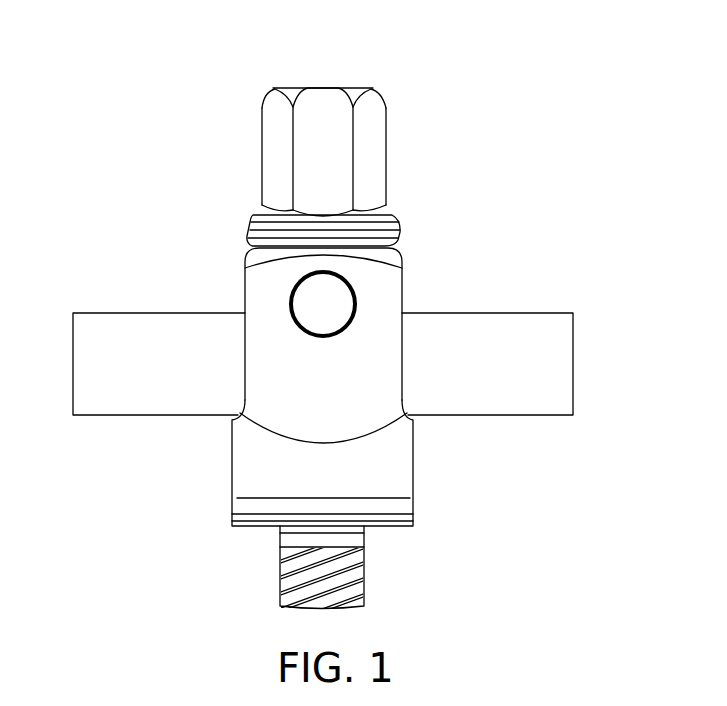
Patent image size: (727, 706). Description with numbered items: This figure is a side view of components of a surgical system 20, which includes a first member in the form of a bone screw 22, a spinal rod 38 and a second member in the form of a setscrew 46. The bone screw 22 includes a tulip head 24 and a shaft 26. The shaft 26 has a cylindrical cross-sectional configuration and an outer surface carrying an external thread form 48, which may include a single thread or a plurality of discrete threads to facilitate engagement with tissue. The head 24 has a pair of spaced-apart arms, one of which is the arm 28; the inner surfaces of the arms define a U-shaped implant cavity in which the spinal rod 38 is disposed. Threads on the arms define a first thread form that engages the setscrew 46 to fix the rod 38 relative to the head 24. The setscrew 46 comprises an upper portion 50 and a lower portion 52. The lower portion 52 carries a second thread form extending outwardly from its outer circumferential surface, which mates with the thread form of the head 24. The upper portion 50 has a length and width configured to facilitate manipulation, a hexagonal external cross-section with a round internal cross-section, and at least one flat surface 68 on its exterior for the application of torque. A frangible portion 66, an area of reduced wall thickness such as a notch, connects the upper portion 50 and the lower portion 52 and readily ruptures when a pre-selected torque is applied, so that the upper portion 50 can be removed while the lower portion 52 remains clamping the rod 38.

The surgical system 20 is at (138, 190).
The bone screw 22 is at (182, 548).
The tulip head 24 is at (413, 470).
The shaft 26 is at (364, 602).
The arm 28 is at (398, 270).
The spinal rod 38 is at (553, 373).
The setscrew 46 is at (397, 128).
The external thread form 48 is at (283, 602).
The upper portion 50 is at (252, 118).
The lower portion 52 is at (408, 222).
The frangible portion 66 is at (262, 215).
The flat surface 68 is at (323, 130).